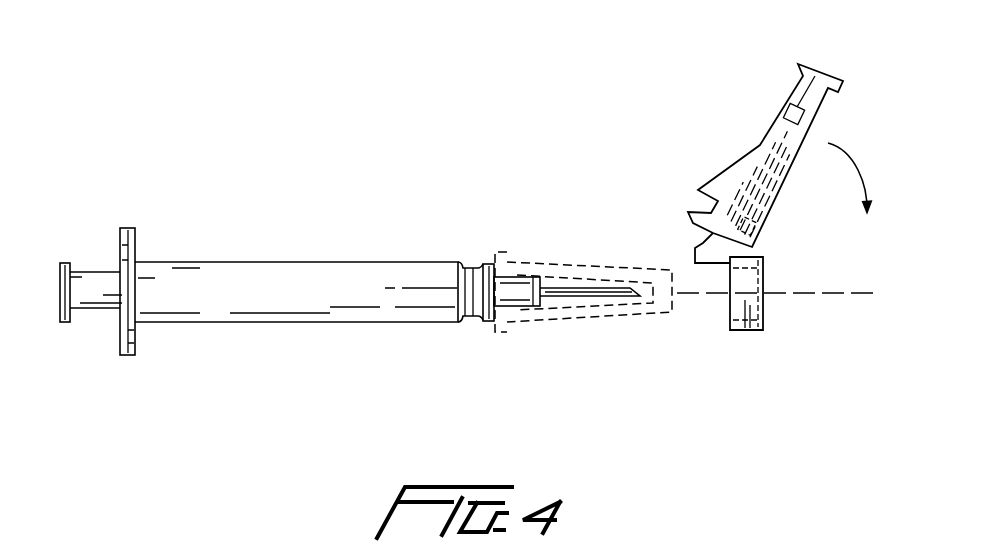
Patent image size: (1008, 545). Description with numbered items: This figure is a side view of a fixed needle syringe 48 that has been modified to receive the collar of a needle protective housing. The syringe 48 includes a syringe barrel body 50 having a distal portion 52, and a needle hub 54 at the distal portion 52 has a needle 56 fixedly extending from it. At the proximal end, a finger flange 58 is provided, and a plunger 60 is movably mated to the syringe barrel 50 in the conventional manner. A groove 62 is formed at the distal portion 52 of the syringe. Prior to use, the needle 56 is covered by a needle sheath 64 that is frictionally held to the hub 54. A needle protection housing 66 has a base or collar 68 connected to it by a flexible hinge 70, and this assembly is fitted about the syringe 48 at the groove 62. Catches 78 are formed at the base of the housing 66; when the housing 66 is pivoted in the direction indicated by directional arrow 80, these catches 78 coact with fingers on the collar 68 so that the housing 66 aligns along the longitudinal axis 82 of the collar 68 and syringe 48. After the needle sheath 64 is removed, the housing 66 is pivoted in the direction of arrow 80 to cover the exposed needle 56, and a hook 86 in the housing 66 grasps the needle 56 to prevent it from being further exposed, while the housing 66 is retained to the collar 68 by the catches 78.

The fixed needle syringe 48 is at (330, 358).
The syringe barrel body 50 is at (315, 262).
The distal portion 52 is at (422, 233).
The needle hub 54 is at (530, 277).
The needle 56 is at (598, 297).
The finger flange 58 is at (120, 240).
The plunger 60 is at (88, 310).
The groove 62 is at (470, 323).
The needle sheath 64 is at (657, 313).
The needle protection housing 66 is at (762, 108).
The collar 68 is at (750, 330).
The flexible hinge 70 is at (695, 240).
The catches 78 is at (748, 228).
The directional arrow 80 is at (840, 165).
The longitudinal axis 82 is at (843, 297).
The hook 86 is at (810, 72).